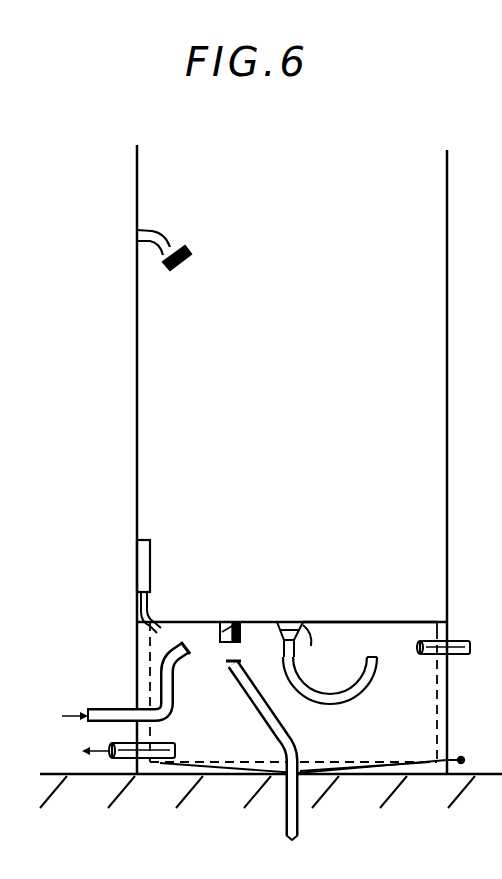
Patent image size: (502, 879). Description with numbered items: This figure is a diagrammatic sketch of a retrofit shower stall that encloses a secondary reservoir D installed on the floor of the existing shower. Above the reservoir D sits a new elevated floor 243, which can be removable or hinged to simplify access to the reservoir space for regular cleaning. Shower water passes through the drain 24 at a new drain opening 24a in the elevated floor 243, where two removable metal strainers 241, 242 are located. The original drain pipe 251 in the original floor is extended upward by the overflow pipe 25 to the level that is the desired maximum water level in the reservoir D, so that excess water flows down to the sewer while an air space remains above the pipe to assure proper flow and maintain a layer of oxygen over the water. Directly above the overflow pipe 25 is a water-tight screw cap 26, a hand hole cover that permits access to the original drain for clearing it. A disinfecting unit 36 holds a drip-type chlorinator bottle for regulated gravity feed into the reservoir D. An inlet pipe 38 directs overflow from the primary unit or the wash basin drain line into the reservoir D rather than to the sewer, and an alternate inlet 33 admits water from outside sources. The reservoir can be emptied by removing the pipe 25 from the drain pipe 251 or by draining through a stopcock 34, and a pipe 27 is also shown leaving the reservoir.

The drain 24 is at (283, 651).
The new drain opening 24a is at (293, 622).
The overflow pipe 25 is at (259, 748).
The water-tight screw cap 26 is at (228, 622).
The outlet pipe 27 is at (176, 756).
The alternate inlet 33 is at (464, 652).
The stopcock 34 is at (462, 756).
The disinfecting unit 36 is at (152, 571).
The inlet pipe 38 is at (178, 688).
The removable metal strainer 241 is at (316, 632).
The removable metal strainer 242 is at (330, 678).
The elevated floor 243 is at (388, 621).
The original drain pipe 251 is at (302, 833).
The secondary reservoir D is at (368, 622).